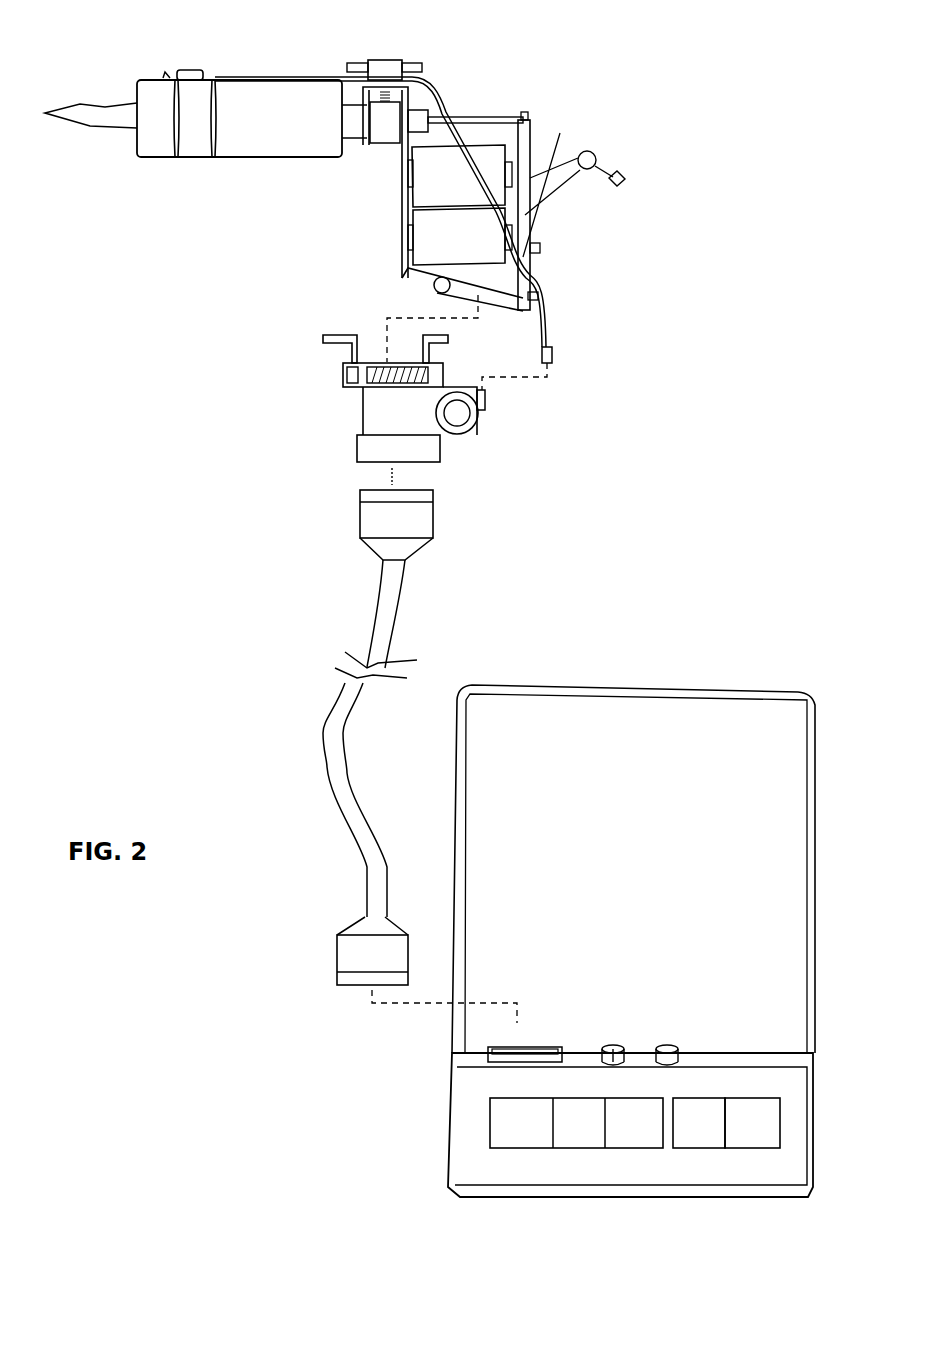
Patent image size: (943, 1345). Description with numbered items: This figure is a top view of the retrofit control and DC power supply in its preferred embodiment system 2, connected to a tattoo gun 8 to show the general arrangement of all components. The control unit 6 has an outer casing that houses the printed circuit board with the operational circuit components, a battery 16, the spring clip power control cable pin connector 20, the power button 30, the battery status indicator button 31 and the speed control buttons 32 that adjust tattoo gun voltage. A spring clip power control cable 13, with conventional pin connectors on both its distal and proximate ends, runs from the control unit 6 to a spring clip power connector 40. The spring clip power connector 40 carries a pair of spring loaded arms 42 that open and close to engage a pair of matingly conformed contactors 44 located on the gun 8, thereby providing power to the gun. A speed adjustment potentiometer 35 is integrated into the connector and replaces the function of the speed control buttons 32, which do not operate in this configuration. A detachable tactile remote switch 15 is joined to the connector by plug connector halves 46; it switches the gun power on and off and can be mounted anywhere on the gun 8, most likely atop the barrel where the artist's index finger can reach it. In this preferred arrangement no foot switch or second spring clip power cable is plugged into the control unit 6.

The preferred embodiment system 2 is at (685, 597).
The control unit 6 is at (805, 1118).
The tattoo gun 8 is at (356, 140).
The spring clip power control cable 13 is at (402, 598).
The tactile remote switch 15 is at (193, 72).
The battery 16 is at (692, 715).
The spring clip power control cable pin connector 20 is at (494, 1038).
The power button 30 is at (743, 1138).
The battery status indicator button 31 is at (695, 1138).
The speed control buttons 32 is at (573, 1145).
The speed adjustment potentiometer 35 is at (475, 420).
The spring clip power connector 40 is at (368, 410).
The spring loaded arms 42 is at (337, 333).
The contactors 44 is at (438, 292).
The plug connector halves 46 is at (485, 402).